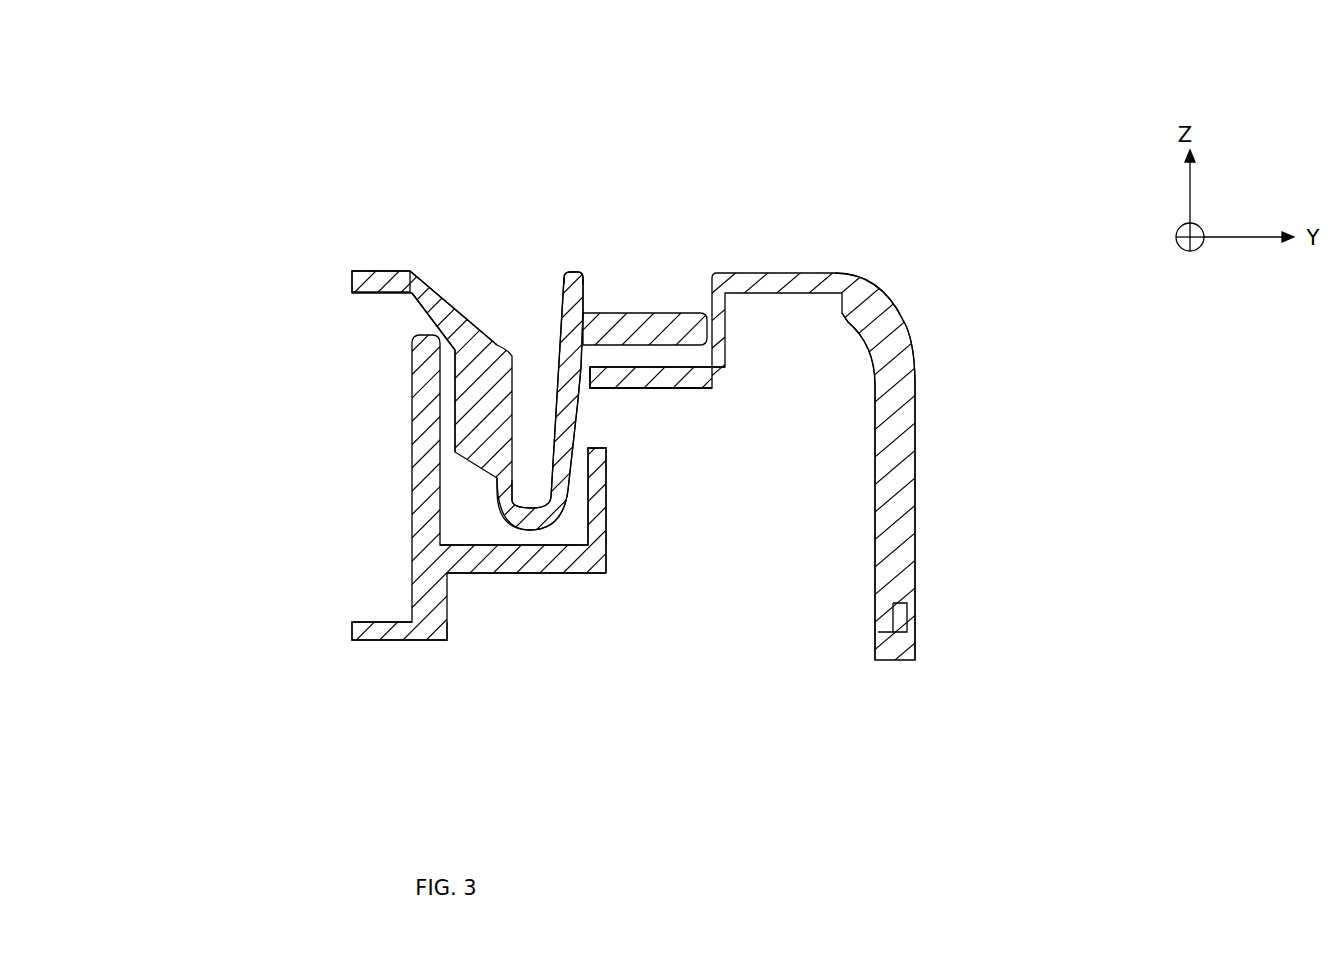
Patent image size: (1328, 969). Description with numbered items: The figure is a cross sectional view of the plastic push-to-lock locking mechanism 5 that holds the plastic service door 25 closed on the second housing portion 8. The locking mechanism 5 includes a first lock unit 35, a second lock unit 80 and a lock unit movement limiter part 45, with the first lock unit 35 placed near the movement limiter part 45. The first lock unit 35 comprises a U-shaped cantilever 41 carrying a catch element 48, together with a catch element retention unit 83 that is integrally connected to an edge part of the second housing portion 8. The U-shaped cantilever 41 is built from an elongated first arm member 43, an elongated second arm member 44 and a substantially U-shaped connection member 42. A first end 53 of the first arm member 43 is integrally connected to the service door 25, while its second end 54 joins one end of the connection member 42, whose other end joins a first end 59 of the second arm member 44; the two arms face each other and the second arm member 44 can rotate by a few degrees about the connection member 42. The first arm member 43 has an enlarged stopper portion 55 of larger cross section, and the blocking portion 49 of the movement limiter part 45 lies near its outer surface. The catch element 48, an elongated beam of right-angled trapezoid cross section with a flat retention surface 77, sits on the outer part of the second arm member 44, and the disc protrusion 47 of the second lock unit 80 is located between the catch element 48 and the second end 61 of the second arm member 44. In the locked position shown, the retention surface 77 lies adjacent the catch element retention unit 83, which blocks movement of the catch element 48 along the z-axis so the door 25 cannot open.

The push-to-lock locking mechanism 5 is at (689, 113).
The second housing portion 8 is at (857, 275).
The service door 25 is at (352, 282).
The first lock unit 35 is at (280, 181).
The U-shaped cantilever 41 is at (447, 297).
The U-shaped connection member 42 is at (543, 572).
The first arm member 43 is at (440, 323).
The second arm member 44 is at (607, 568).
The lock unit movement limiter part 45 is at (434, 650).
The disc protrusion 47 is at (630, 306).
The catch element 48 is at (590, 400).
The blocking portion 49 is at (428, 515).
The first end of the first arm member 53 is at (420, 283).
The second end of the first arm member 54 is at (497, 478).
The enlarged stopper portion 55 is at (480, 442).
The first end of the second arm member 59 is at (557, 473).
The second end of the second arm member 61 is at (570, 272).
The retention surface 77 is at (558, 345).
The second lock unit 80 is at (821, 227).
The catch element retention unit 83 is at (725, 370).